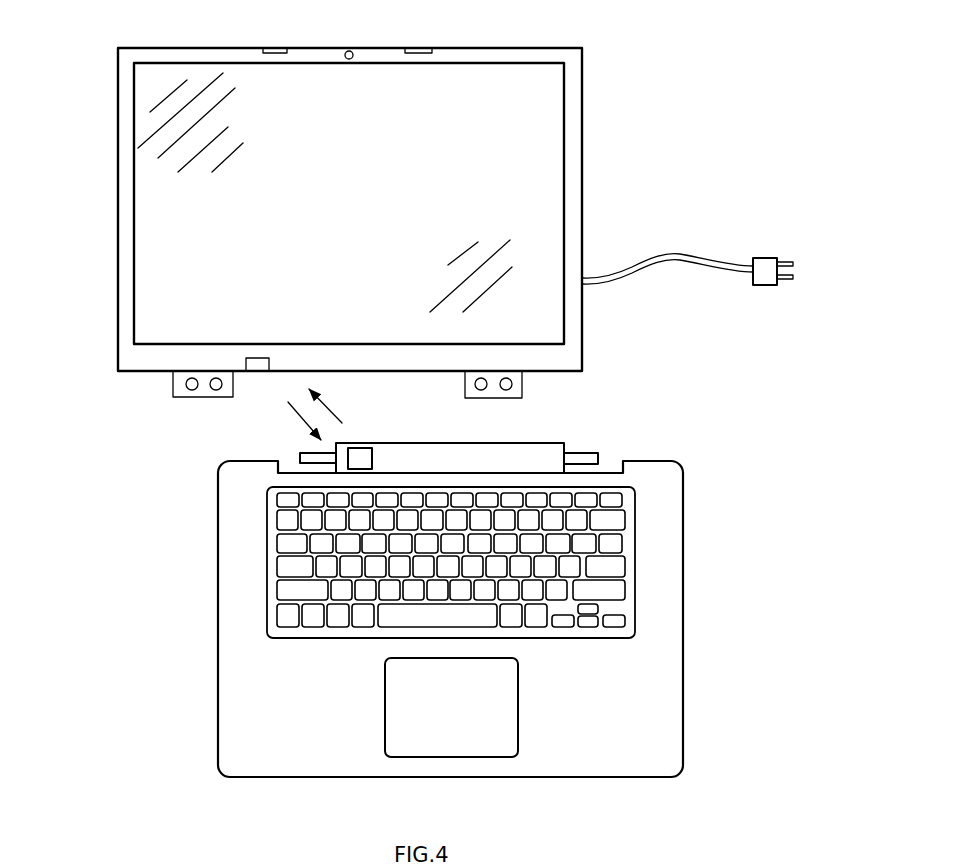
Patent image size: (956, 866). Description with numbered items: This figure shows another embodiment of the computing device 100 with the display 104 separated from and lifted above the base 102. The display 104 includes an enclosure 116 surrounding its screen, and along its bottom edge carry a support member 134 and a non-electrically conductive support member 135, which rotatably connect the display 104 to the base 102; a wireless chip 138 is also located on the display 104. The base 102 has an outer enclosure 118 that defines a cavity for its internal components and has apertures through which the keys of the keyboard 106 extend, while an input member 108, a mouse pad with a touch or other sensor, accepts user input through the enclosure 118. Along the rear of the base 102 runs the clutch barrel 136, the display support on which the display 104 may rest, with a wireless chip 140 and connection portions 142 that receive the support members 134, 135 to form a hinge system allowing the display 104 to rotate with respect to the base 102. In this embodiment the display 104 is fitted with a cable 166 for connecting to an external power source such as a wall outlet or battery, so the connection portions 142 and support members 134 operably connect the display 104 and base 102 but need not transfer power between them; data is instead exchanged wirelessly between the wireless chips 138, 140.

The computing device 100 is at (646, 204).
The base 102 is at (512, 619).
The display 104 is at (366, 221).
The keyboard 106 is at (620, 567).
The input member 108 is at (510, 726).
The enclosure 116 is at (128, 361).
The enclosure 118 is at (675, 748).
The support member 134 is at (465, 388).
The non-electrically conductive support member 135 is at (194, 398).
The clutch barrel 136 is at (492, 433).
The wireless chip 138 is at (258, 372).
The wireless chip 140 is at (358, 448).
The connection portion 142 is at (591, 456).
The cable 166 is at (709, 258).